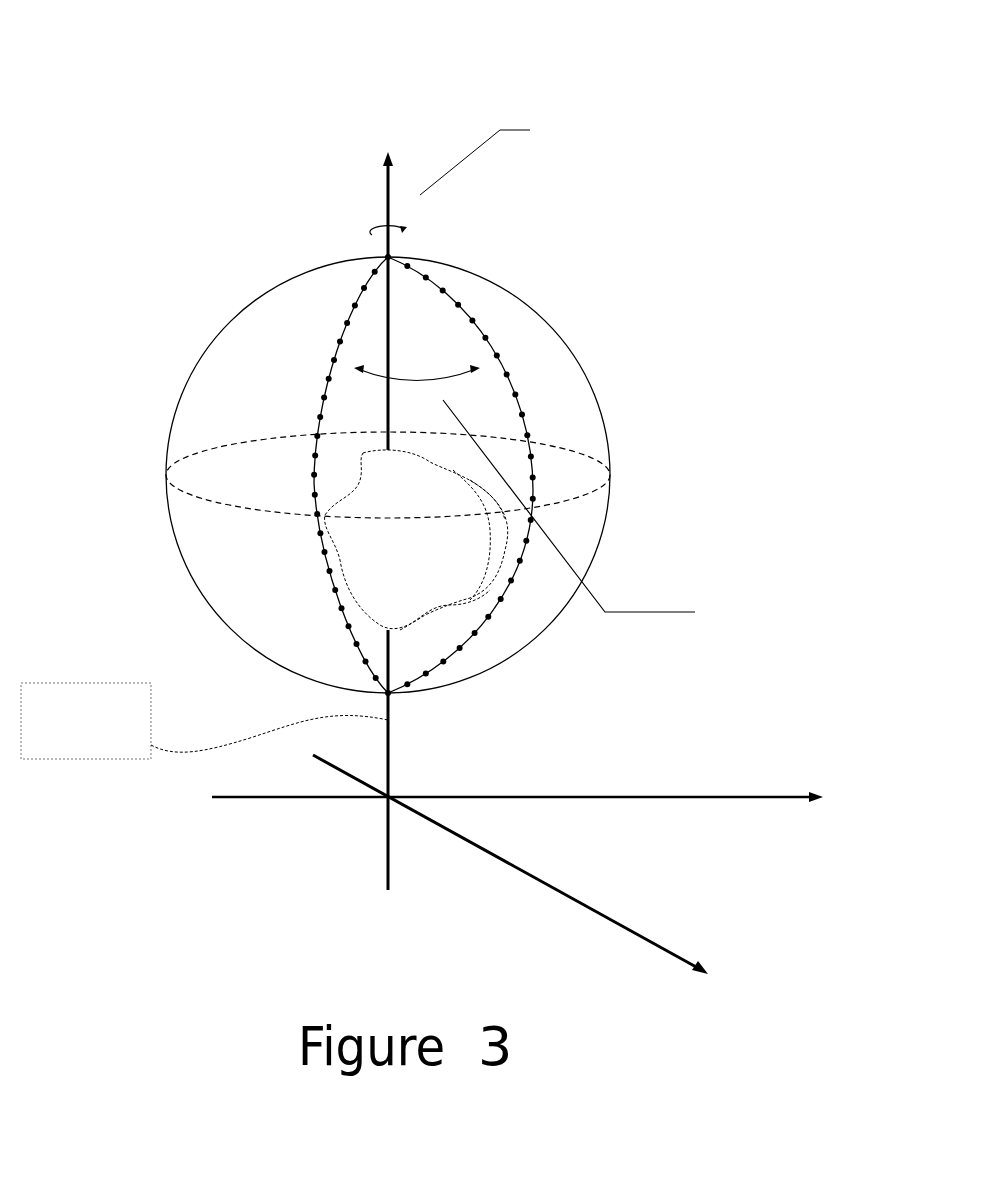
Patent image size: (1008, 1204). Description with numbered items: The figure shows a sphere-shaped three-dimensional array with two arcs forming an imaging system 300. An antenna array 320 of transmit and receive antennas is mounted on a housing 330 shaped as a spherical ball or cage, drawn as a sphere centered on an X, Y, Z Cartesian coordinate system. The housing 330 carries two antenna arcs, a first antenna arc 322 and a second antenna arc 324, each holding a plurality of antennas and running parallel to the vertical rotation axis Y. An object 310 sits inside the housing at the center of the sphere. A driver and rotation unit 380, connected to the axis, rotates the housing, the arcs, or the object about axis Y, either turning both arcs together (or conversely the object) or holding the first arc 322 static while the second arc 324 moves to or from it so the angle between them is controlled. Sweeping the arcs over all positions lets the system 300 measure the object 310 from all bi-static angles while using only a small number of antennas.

The imaging system 300 is at (140, 0).
The object 310 is at (510, 500).
The antenna array 320 is at (540, 390).
The antenna arc 322 is at (317, 353).
The antenna arc 324 is at (470, 300).
The housing 330 is at (605, 515).
The driver and rotation unit 380 is at (87, 760).